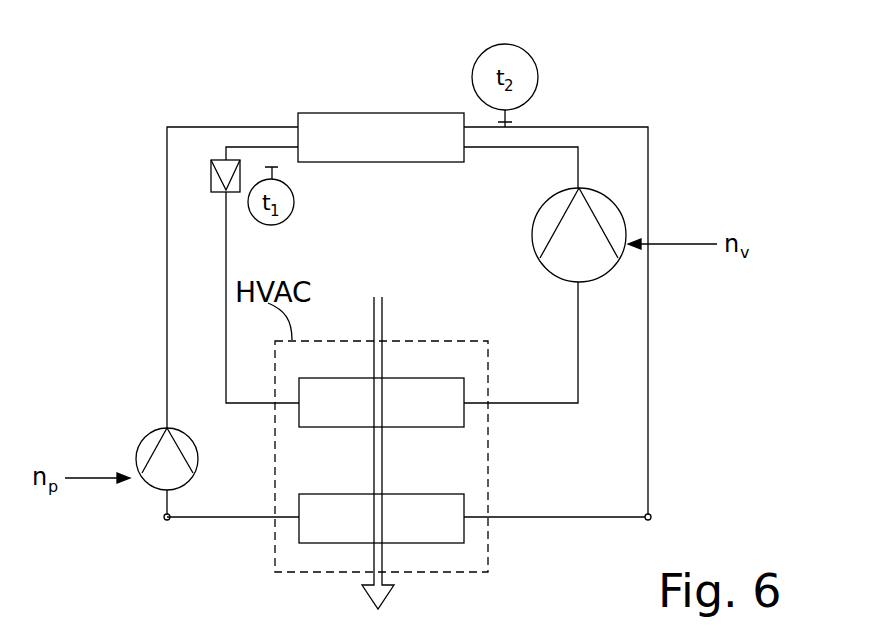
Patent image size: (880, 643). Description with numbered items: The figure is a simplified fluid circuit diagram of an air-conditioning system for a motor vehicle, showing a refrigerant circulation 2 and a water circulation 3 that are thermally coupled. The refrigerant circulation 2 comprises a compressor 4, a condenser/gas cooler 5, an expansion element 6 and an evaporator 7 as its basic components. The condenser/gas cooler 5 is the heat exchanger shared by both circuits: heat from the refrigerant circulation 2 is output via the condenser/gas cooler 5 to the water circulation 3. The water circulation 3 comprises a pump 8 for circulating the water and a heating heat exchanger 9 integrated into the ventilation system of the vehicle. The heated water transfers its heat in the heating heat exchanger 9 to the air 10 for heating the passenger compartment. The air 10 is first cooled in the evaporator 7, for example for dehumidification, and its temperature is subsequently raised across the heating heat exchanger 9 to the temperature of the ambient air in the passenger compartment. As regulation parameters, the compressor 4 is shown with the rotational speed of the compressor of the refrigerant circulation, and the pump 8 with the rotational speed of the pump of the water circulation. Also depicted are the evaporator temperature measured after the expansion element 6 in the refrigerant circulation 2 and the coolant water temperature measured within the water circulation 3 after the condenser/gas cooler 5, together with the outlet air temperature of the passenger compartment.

The refrigerant circulation 2 is at (578, 363).
The water circulation 3 is at (648, 458).
The compressor 4 is at (613, 205).
The condenser/gas cooler 5 is at (355, 114).
The expansion element 6 is at (211, 180).
The evaporator 7 is at (437, 388).
The pump 8 is at (138, 442).
The heating heat exchanger 9 is at (448, 532).
The air 10 is at (375, 330).